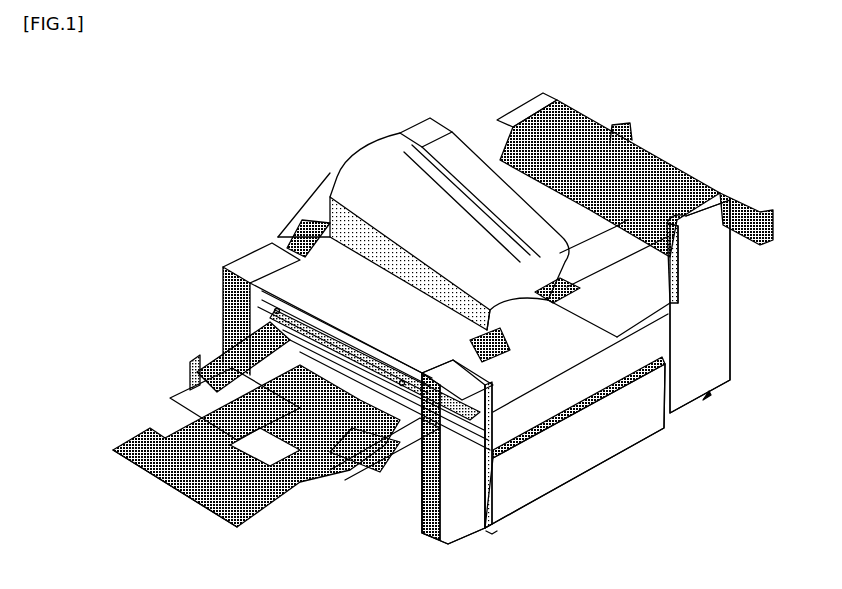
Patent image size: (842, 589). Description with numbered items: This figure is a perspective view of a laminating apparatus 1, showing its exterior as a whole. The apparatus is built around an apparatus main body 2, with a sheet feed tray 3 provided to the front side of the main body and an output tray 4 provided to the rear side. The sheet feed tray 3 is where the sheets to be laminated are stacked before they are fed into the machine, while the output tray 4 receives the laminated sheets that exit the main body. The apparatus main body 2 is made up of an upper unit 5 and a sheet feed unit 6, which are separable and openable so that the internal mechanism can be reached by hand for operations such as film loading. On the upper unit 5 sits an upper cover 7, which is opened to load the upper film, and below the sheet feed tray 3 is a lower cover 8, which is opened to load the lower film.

The laminating apparatus 1 is at (236, 211).
The apparatus main body 2 is at (593, 433).
The sheet feed tray 3 is at (225, 358).
The output tray 4 is at (763, 237).
The upper unit 5 is at (580, 302).
The sheet feed unit 6 is at (453, 480).
The upper cover 7 is at (383, 197).
The lower cover 8 is at (392, 480).